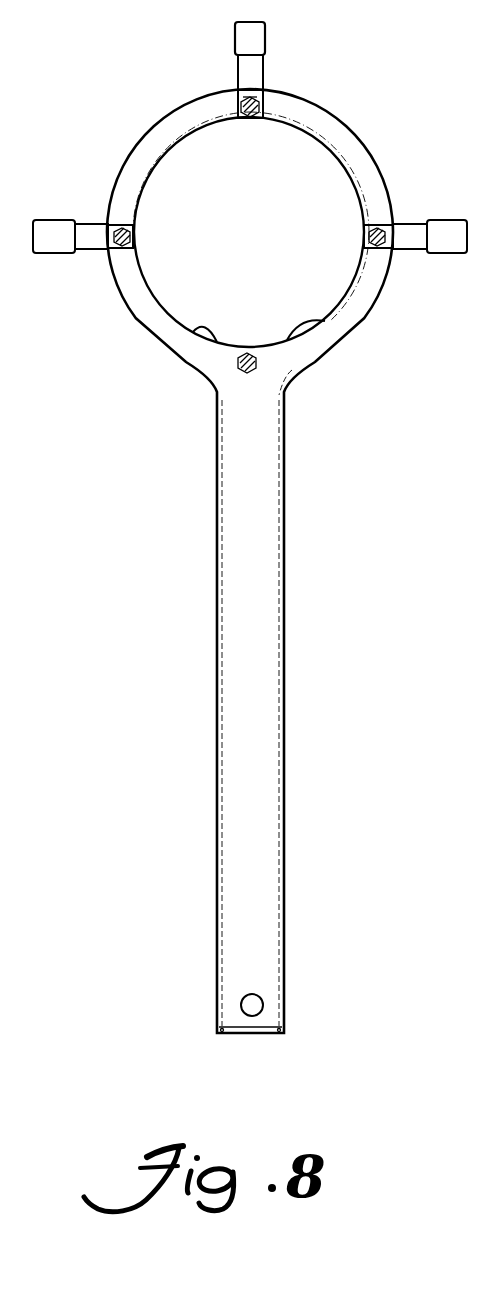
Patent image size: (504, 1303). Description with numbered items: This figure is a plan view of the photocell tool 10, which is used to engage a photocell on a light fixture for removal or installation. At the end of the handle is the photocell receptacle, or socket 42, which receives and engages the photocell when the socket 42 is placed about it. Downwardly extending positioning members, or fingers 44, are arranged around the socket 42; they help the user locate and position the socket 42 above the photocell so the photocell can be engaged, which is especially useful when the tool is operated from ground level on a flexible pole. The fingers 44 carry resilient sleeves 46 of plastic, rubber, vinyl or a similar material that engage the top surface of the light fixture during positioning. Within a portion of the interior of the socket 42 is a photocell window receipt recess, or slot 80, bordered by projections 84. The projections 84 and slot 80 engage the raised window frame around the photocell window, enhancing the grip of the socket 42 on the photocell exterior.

The photocell tool 10 is at (193, 400).
The photocell receptacle 42 is at (339, 165).
The positioning members 44 is at (266, 67).
The resilient sleeves 46 is at (258, 35).
The photocell window receipt recess 80 is at (247, 348).
The projections 84 is at (207, 331).